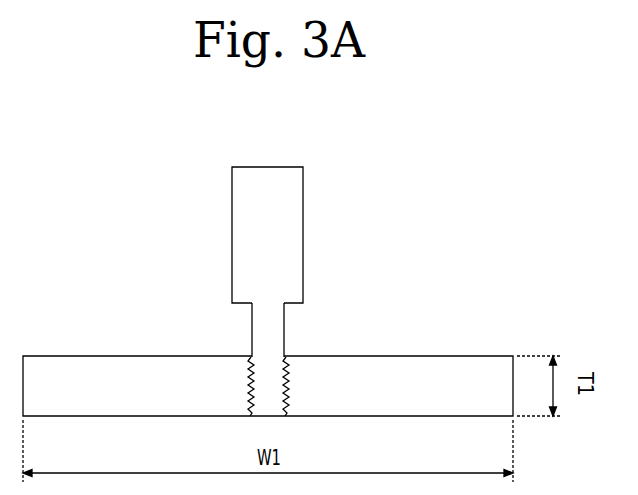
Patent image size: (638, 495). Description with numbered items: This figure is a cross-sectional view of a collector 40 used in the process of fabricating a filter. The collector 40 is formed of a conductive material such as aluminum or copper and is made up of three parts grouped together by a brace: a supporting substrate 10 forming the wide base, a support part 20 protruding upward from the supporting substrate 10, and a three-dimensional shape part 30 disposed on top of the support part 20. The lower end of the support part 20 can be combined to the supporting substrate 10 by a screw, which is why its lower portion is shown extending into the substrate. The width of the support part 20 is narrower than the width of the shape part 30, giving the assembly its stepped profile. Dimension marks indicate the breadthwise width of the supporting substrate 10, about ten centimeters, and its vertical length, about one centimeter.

The supporting substrate 10 is at (205, 357).
The support part 20 is at (252, 315).
The three-dimensional shape part 30 is at (232, 244).
The collector 40 is at (111, 232).